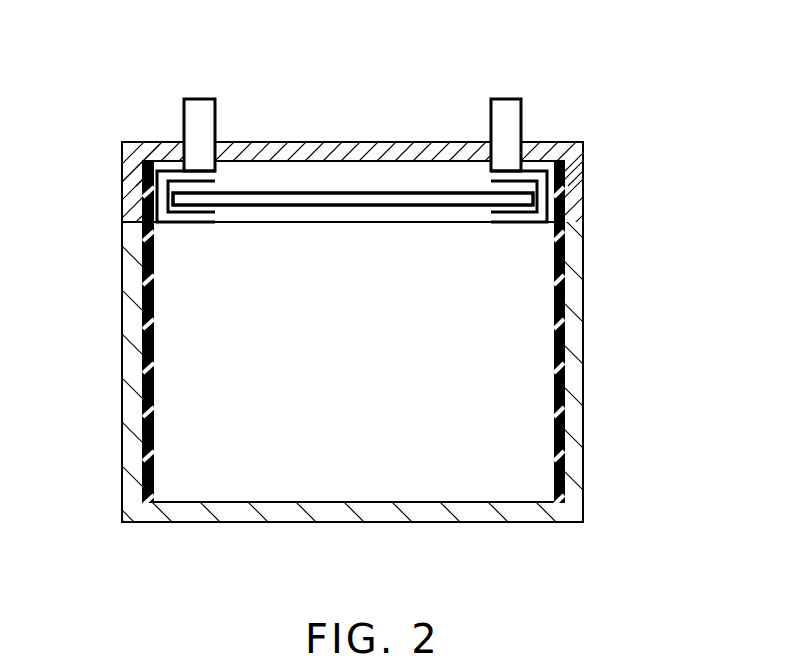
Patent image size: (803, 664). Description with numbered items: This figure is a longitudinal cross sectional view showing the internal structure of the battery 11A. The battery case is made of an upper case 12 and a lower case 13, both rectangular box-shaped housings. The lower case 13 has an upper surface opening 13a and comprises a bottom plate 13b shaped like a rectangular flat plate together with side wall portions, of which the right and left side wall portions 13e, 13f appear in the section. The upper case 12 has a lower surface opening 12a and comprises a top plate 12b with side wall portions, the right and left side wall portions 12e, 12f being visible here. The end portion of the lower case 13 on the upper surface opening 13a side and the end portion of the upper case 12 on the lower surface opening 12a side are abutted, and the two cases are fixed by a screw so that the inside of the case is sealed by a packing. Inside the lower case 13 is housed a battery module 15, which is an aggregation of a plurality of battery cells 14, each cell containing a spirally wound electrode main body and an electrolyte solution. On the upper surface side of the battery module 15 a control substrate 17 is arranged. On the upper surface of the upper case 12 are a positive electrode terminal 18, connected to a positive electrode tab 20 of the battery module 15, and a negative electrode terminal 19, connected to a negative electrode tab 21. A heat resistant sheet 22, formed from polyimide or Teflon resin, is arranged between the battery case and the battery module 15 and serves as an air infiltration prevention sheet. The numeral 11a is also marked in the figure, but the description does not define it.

The battery 11A is at (670, 291).
The sealed portion 11a is at (588, 479).
The upper case 12 is at (562, 142).
The lower surface opening 12a is at (570, 222).
The top plate 12b is at (378, 142).
The side wall portion 12e is at (584, 160).
The side wall portion 12f is at (122, 160).
The lower case 13 is at (585, 450).
The upper surface opening 13a is at (142, 218).
The bottom plate 13b is at (408, 522).
The side wall portion 13e is at (585, 408).
The side wall portion 13f is at (123, 418).
The battery cell 14 is at (250, 480).
The battery module 15 is at (508, 315).
The control substrate 17 is at (441, 192).
The positive electrode terminal 18 is at (200, 98).
The negative electrode terminal 19 is at (504, 98).
The positive electrode tab 20 is at (157, 190).
The negative electrode tab 21 is at (545, 195).
The heat resistant sheet 22 is at (150, 358).